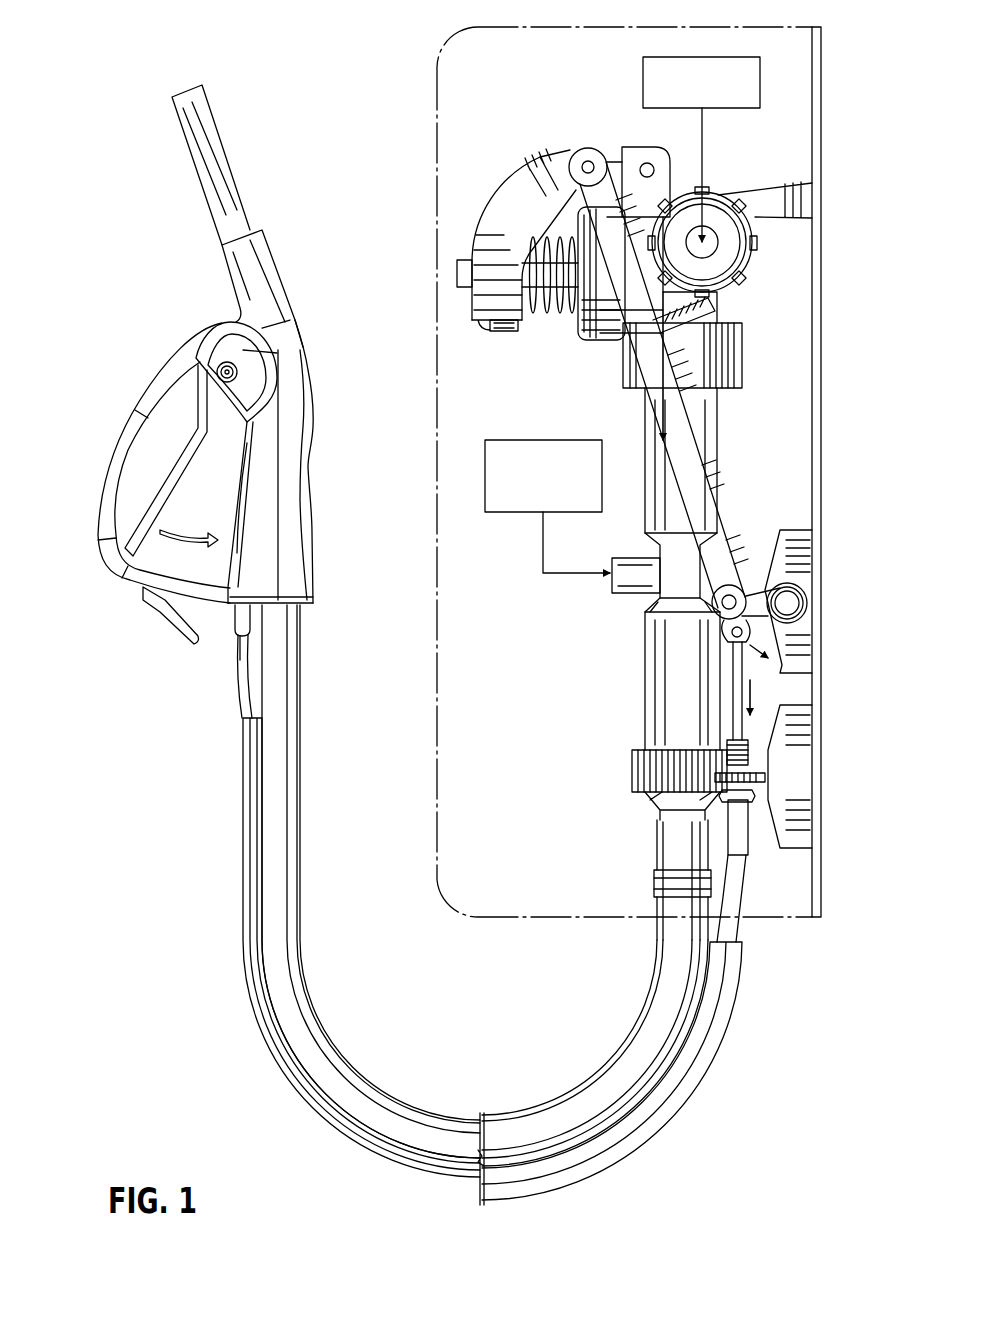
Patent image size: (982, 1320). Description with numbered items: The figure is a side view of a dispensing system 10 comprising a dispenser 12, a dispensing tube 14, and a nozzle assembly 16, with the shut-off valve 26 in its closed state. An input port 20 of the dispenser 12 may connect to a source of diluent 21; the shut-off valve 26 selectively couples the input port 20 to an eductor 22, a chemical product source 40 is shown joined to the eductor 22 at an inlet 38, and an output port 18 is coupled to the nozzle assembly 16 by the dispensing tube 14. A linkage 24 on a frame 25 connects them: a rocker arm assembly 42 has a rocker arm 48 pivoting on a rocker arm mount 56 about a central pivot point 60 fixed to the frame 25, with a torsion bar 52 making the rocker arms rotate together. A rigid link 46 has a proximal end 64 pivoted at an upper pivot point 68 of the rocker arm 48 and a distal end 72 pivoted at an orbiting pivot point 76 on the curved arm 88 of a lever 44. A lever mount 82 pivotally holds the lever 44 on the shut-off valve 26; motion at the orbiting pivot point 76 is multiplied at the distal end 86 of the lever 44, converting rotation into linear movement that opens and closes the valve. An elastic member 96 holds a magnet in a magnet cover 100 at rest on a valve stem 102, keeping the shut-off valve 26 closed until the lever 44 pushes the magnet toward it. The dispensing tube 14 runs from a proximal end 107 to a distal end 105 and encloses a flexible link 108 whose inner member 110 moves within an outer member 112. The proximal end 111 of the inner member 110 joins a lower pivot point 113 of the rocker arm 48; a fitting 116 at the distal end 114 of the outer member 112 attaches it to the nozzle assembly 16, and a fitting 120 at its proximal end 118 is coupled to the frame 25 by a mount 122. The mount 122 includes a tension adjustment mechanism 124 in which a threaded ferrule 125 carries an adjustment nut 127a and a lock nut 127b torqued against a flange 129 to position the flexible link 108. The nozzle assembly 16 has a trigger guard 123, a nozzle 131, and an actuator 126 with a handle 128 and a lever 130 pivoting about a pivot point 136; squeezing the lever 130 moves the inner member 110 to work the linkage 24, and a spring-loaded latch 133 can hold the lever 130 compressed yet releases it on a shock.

The dispensing system 10 is at (172, 1074).
The dispenser 12 is at (436, 106).
The dispensing tube 14 is at (362, 1060).
The nozzle assembly 16 is at (326, 375).
The output port 18 is at (630, 773).
The input port 20 is at (712, 243).
The source of diluent 21 is at (643, 70).
The eductor 22 is at (640, 550).
The linkage 24 is at (537, 120).
The frame 25 is at (821, 100).
The shut-off valve 26 is at (602, 345).
The chemical inlet fitting 38 is at (612, 584).
The chemical product source 40 is at (494, 442).
The rocker arm assembly 42 is at (748, 582).
The lever 44 is at (498, 192).
The rigid link 46 is at (672, 376).
The rocker arm 48 is at (726, 628).
The torsion bar 52 is at (802, 596).
The rocker arm mount 56 is at (800, 645).
The central pivot point 60 is at (790, 603).
The proximal end 64 is at (714, 611).
The upper pivot point 68 is at (737, 590).
The distal end 72 is at (602, 158).
The orbiting pivot point 76 is at (588, 161).
The lever mount 82 is at (665, 152).
The distal end 86 is at (480, 322).
The arm 88 is at (512, 250).
The elastic member 96 is at (560, 314).
The magnet cover 100 is at (505, 333).
The valve stem 102 is at (456, 273).
The distal end 105 is at (300, 616).
The proximal end 107 is at (725, 850).
The flexible link 108 is at (742, 907).
The inner member 110 is at (733, 706).
The proximal end 111 is at (733, 660).
The outer member 112 is at (735, 937).
The lower pivot point 113 is at (732, 634).
The distal end 114 is at (234, 642).
The fitting 116 is at (245, 618).
The proximal end 118 is at (750, 864).
The fitting 120 is at (682, 868).
The mount 122 is at (798, 777).
The trigger guard 123 is at (118, 426).
The tension adjustment mechanism 124 is at (758, 745).
The threaded ferrule 125 is at (728, 748).
The actuator 126 is at (150, 503).
The adjustment nut 127a is at (718, 778).
The lock nut 127b is at (730, 790).
The handle 128 is at (315, 546).
The flange 129 is at (672, 812).
The lever 130 is at (178, 474).
The nozzle 131 is at (234, 172).
The spring-loaded latch 133 is at (170, 634).
The pivot point 136 is at (226, 362).